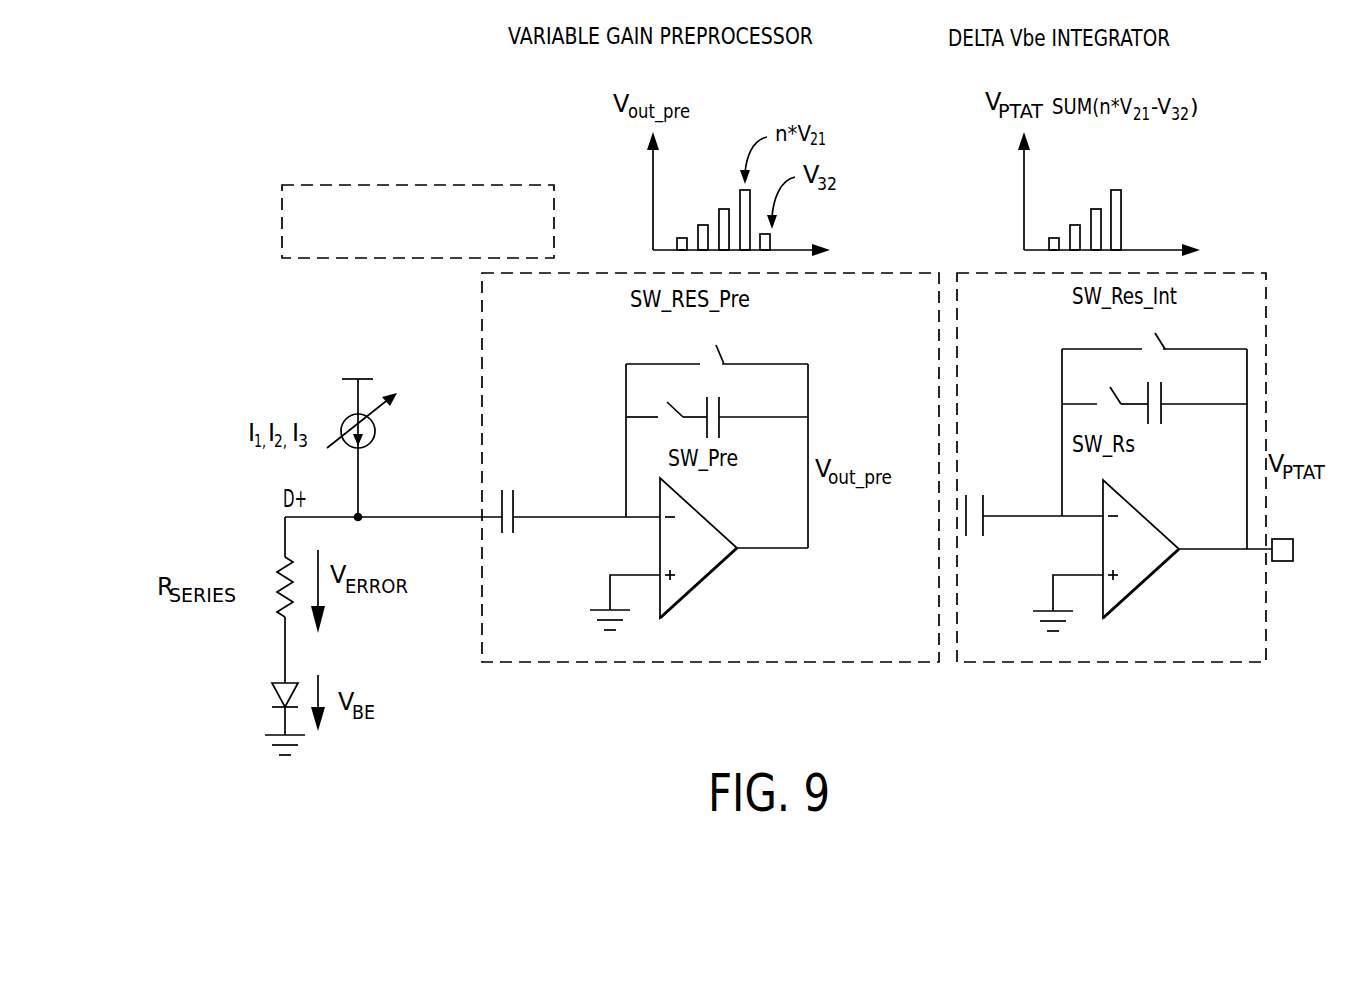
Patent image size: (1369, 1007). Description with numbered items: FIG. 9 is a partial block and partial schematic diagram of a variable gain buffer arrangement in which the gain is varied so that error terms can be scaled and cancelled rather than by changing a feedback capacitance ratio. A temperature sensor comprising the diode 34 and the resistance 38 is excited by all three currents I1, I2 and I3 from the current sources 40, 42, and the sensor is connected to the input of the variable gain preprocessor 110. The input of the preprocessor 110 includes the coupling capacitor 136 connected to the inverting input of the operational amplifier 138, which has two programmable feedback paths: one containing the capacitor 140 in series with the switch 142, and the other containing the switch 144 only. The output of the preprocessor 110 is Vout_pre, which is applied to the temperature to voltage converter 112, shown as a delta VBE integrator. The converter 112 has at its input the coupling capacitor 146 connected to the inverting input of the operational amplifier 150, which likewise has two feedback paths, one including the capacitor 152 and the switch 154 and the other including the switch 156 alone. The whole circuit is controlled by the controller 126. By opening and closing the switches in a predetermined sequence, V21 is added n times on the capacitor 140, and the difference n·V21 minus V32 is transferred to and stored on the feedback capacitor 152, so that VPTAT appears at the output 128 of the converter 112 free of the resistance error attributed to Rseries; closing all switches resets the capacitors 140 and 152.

The diode 34 is at (283, 682).
The resistance 38 is at (284, 567).
The current source 40 is at (336, 448).
The current source 42 is at (348, 418).
The variable gain preprocessor 110 is at (721, 664).
The temperature to voltage converter 112 is at (1113, 664).
The controller 126 is at (483, 237).
The output 128 is at (1279, 537).
The coupling capacitor 136 is at (515, 498).
The operational amplifier 138 is at (702, 514).
The capacitor 140 is at (722, 404).
The switch 142 is at (664, 406).
The switch 144 is at (718, 346).
The coupling capacitor 146 is at (985, 500).
The operational amplifier 150 is at (1146, 517).
The capacitor 152 is at (1163, 388).
The switch 154 is at (1110, 393).
The switch 156 is at (1153, 337).